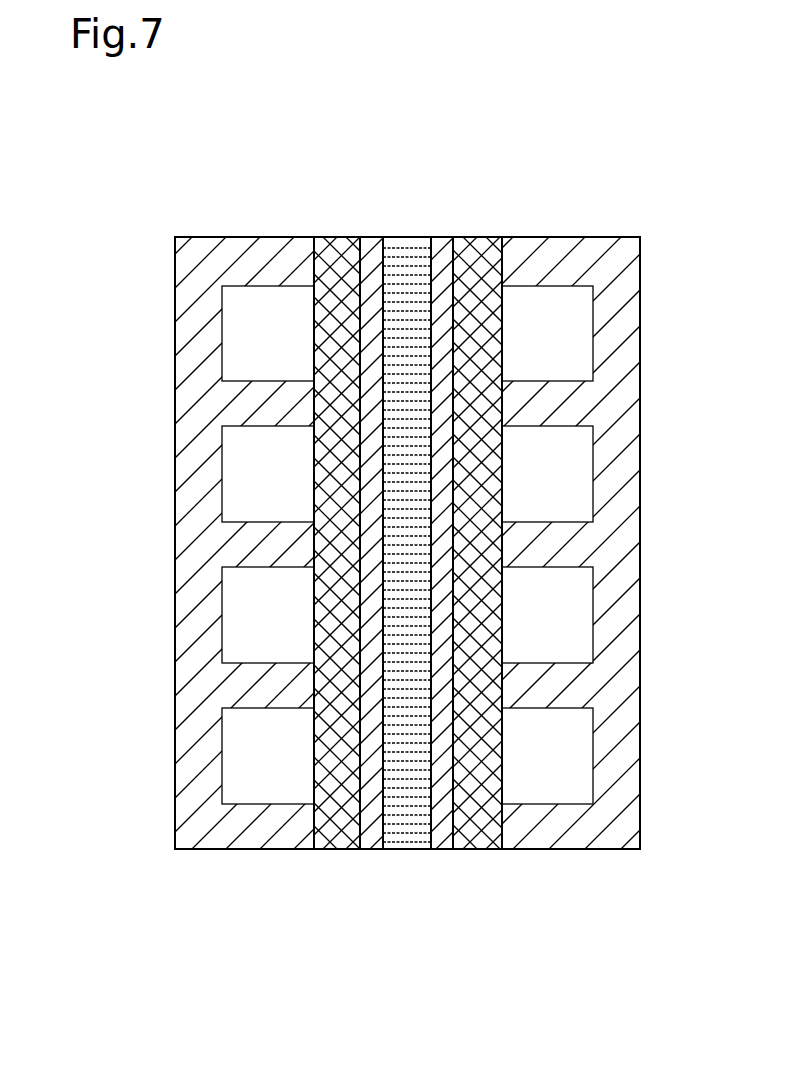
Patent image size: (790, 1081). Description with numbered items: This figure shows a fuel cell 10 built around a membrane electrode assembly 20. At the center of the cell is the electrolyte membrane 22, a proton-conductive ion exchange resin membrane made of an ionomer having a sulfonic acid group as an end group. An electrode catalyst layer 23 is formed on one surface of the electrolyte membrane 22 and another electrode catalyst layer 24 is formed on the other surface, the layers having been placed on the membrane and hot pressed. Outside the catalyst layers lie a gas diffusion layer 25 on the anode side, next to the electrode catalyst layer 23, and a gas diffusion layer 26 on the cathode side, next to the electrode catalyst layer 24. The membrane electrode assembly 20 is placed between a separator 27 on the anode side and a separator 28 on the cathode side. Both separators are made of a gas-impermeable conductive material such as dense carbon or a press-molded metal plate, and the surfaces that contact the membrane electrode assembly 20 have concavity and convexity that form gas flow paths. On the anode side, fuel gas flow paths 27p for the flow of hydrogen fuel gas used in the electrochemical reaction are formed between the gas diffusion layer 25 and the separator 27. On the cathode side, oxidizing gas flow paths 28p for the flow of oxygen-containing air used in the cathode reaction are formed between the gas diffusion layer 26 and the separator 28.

The fuel cell 10 is at (604, 140).
The membrane electrode assembly 20 is at (498, 178).
The electrolyte membrane 22 is at (406, 237).
The electrode catalyst layer 23 is at (372, 237).
The electrode catalyst layer 24 is at (442, 237).
The gas diffusion layer 25 is at (340, 237).
The gas diffusion layer 26 is at (480, 237).
The separator 27 is at (236, 237).
The fuel gas flow paths 27p is at (240, 647).
The separator 28 is at (569, 237).
The oxidizing gas flow paths 28p is at (577, 647).